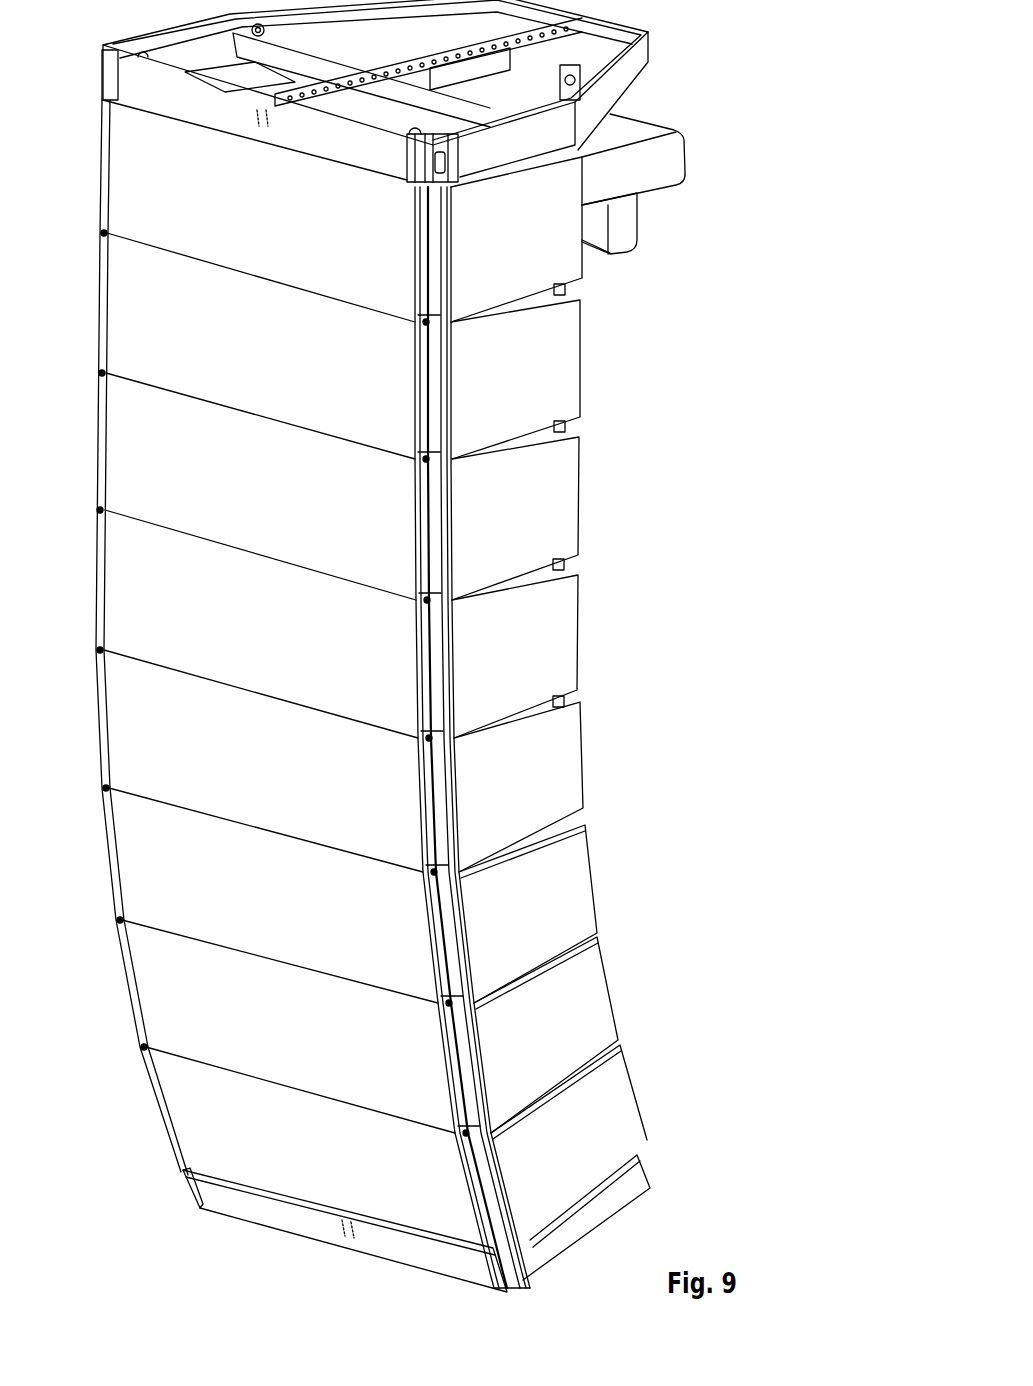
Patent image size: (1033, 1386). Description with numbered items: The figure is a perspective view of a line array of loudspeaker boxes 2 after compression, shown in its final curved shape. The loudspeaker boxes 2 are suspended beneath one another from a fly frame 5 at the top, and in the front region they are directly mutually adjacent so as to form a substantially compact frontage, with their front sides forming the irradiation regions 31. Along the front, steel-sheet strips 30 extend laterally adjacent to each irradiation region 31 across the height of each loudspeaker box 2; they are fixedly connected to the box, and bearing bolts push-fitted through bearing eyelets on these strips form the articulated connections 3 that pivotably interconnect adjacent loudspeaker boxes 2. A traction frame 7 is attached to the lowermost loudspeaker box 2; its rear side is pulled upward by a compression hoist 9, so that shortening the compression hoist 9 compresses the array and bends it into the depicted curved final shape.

The loudspeaker box 2 is at (630, 1101).
The articulated connection 3 is at (144, 1047).
The fly frame 5 is at (640, 66).
The traction frame 7 is at (615, 1203).
The compression hoist 9 is at (568, 290).
The steel-sheet strip 30 is at (490, 1173).
The irradiation region 31 is at (326, 1162).